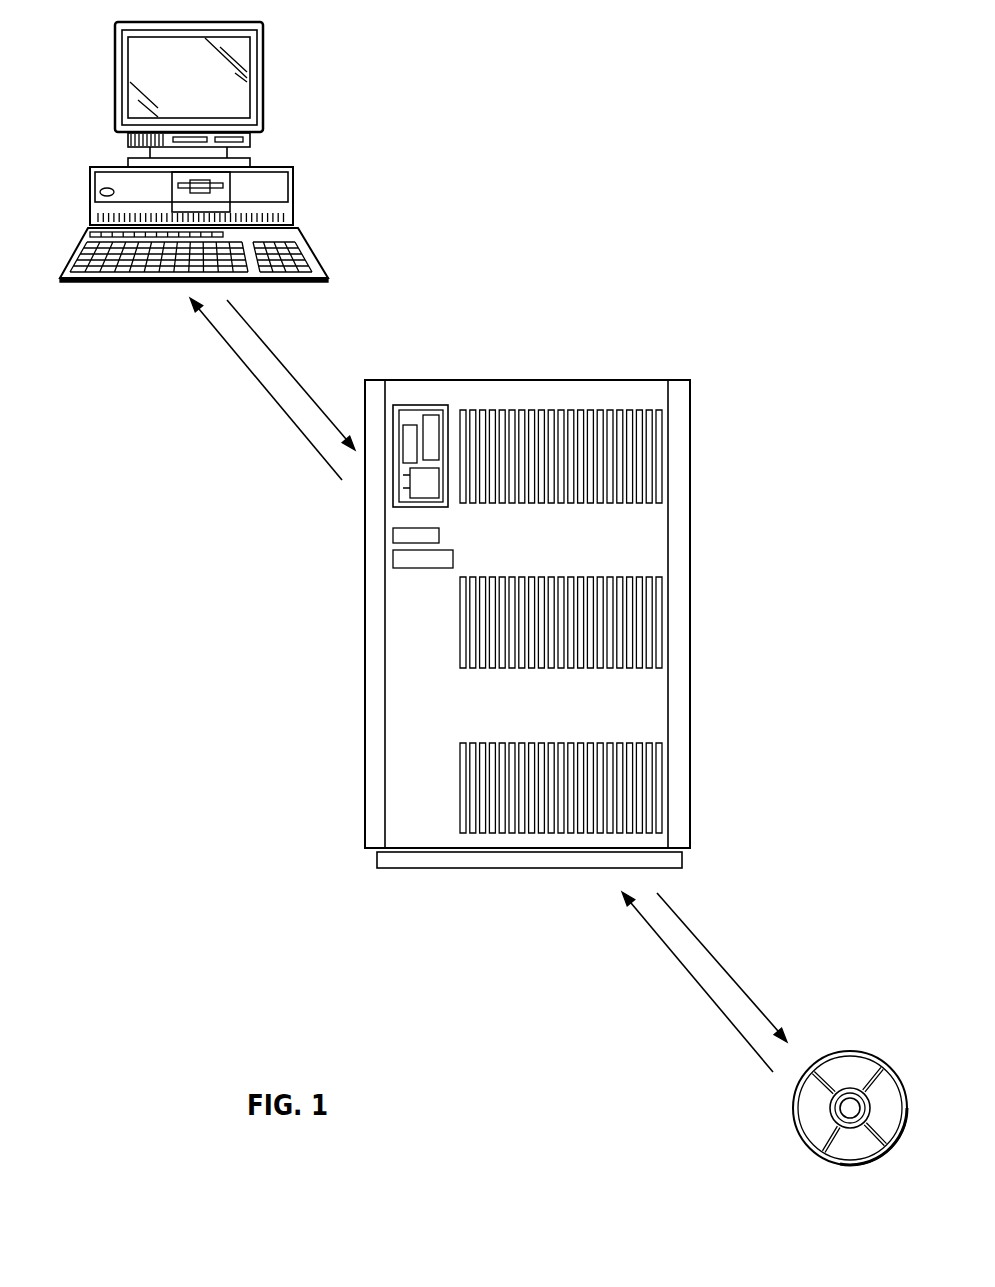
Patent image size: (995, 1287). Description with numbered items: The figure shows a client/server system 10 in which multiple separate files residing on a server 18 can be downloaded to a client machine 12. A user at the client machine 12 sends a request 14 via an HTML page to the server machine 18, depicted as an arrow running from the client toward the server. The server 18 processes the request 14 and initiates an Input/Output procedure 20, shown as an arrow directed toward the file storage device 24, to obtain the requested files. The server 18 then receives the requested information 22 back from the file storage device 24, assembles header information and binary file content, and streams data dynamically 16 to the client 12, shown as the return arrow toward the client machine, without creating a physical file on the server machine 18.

The client/server system 10 is at (735, 247).
The client machine 12 is at (318, 260).
The request 14 is at (307, 390).
The dynamically streamed data 16 is at (258, 385).
The server machine 18 is at (445, 870).
The Input/Output procedure 20 is at (742, 987).
The requested information 22 is at (697, 983).
The file storage device 24 is at (847, 1052).